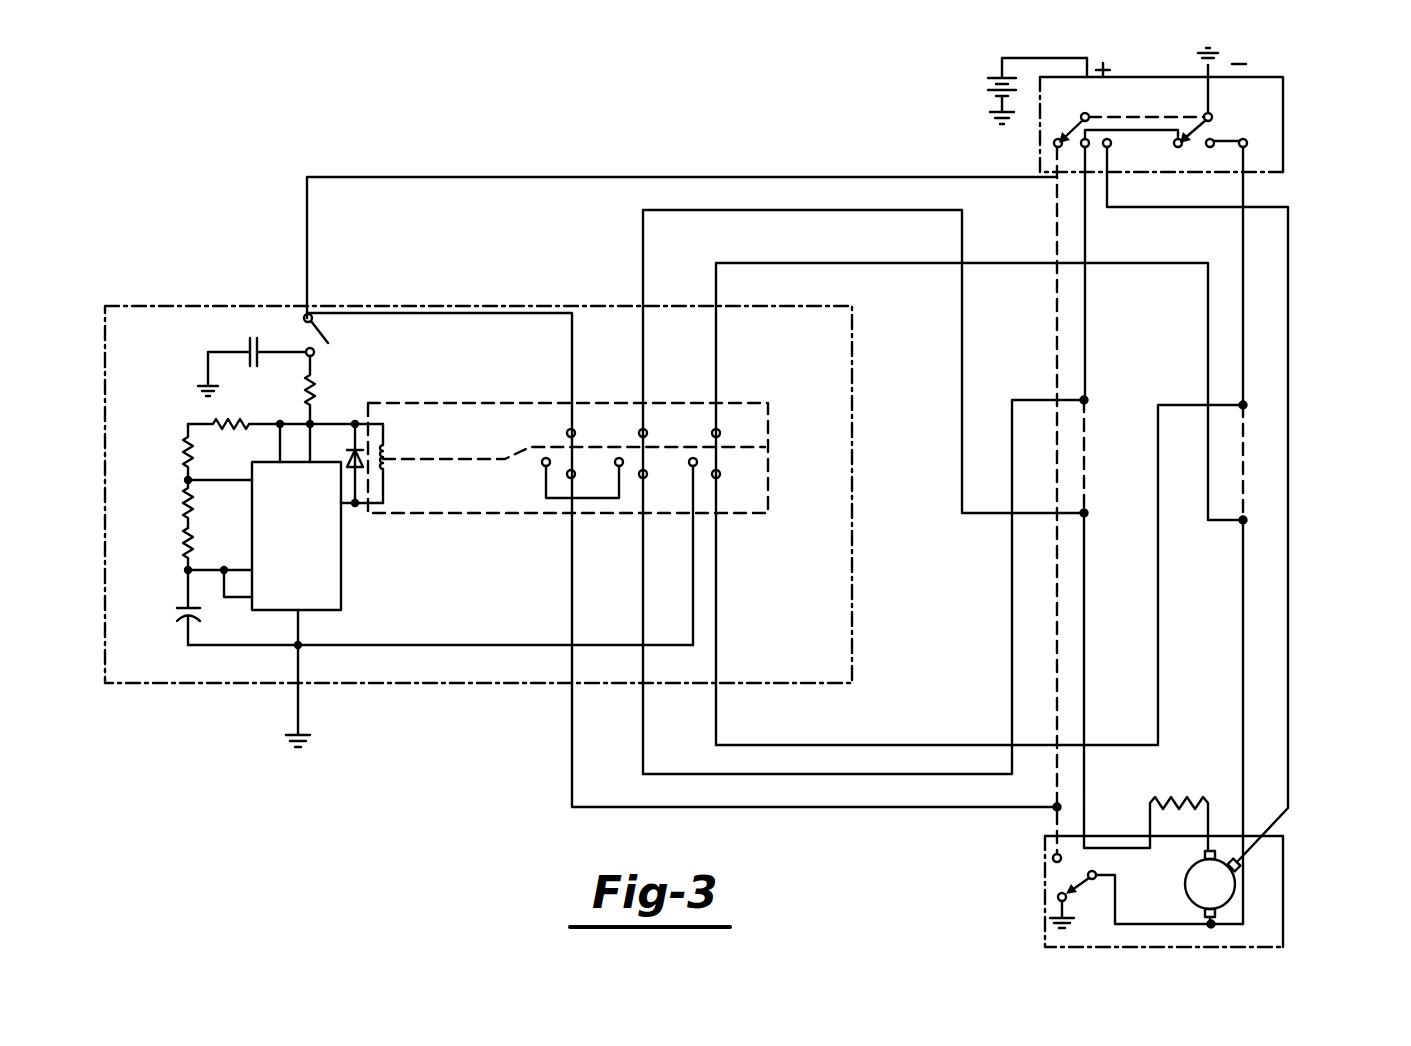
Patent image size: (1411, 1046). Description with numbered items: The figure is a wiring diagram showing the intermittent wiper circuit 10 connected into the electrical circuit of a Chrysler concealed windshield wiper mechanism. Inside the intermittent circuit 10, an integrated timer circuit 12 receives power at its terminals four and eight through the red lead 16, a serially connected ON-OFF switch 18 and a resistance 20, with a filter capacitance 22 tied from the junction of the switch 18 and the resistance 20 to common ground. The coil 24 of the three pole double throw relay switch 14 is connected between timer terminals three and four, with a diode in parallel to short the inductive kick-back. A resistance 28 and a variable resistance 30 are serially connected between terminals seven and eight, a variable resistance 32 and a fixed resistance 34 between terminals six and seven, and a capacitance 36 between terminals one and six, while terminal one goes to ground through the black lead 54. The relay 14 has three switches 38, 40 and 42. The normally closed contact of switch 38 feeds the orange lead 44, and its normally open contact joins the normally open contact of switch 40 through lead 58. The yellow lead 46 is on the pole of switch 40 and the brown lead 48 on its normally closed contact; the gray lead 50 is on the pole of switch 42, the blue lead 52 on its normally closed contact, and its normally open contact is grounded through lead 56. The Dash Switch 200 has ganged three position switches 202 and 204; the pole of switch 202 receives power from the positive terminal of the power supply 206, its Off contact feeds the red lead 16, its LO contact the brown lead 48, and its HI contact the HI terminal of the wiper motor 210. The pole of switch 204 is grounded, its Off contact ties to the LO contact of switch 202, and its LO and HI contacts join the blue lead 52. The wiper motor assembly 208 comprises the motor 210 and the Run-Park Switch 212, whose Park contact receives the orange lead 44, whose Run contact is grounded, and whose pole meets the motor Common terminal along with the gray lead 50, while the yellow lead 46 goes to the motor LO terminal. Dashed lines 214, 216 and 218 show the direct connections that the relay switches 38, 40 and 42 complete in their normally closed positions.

The intermittent wiper circuit 10 is at (853, 640).
The integrated timer circuit 12 is at (341, 590).
The three pole double throw relay switch 14 is at (463, 398).
The red lead 16 is at (512, 179).
The ON-OFF switch 18 is at (318, 323).
The resistance 20 is at (318, 397).
The filter capacitance 22 is at (248, 350).
The coil 24 is at (385, 468).
The resistance 28 is at (222, 430).
The variable resistance 30 is at (204, 443).
The variable resistance 32 is at (204, 496).
The fixed resistance 34 is at (194, 562).
The capacitance 36 is at (184, 615).
The switch 38 is at (560, 428).
The switch 40 is at (632, 428).
The switch 42 is at (703, 428).
The orange lead 44 is at (572, 755).
The yellow lead 46 is at (733, 212).
The brown lead 48 is at (666, 737).
The gray lead 50 is at (888, 265).
The blue lead 52 is at (724, 743).
The black lead 54 is at (298, 710).
The lead 56 is at (436, 645).
The lead 58 is at (600, 499).
The Dash Switch 200 is at (1283, 152).
The switch 202 is at (1068, 124).
The switch 204 is at (1215, 128).
The power supply 206 is at (994, 100).
The wiper motor assembly 208 is at (1283, 851).
The wiper motor 210 is at (1260, 899).
The Run-Park Switch 212 is at (1050, 876).
The dashed line 214 is at (1057, 376).
The dashed line 216 is at (1085, 446).
The dashed line 218 is at (1245, 462).